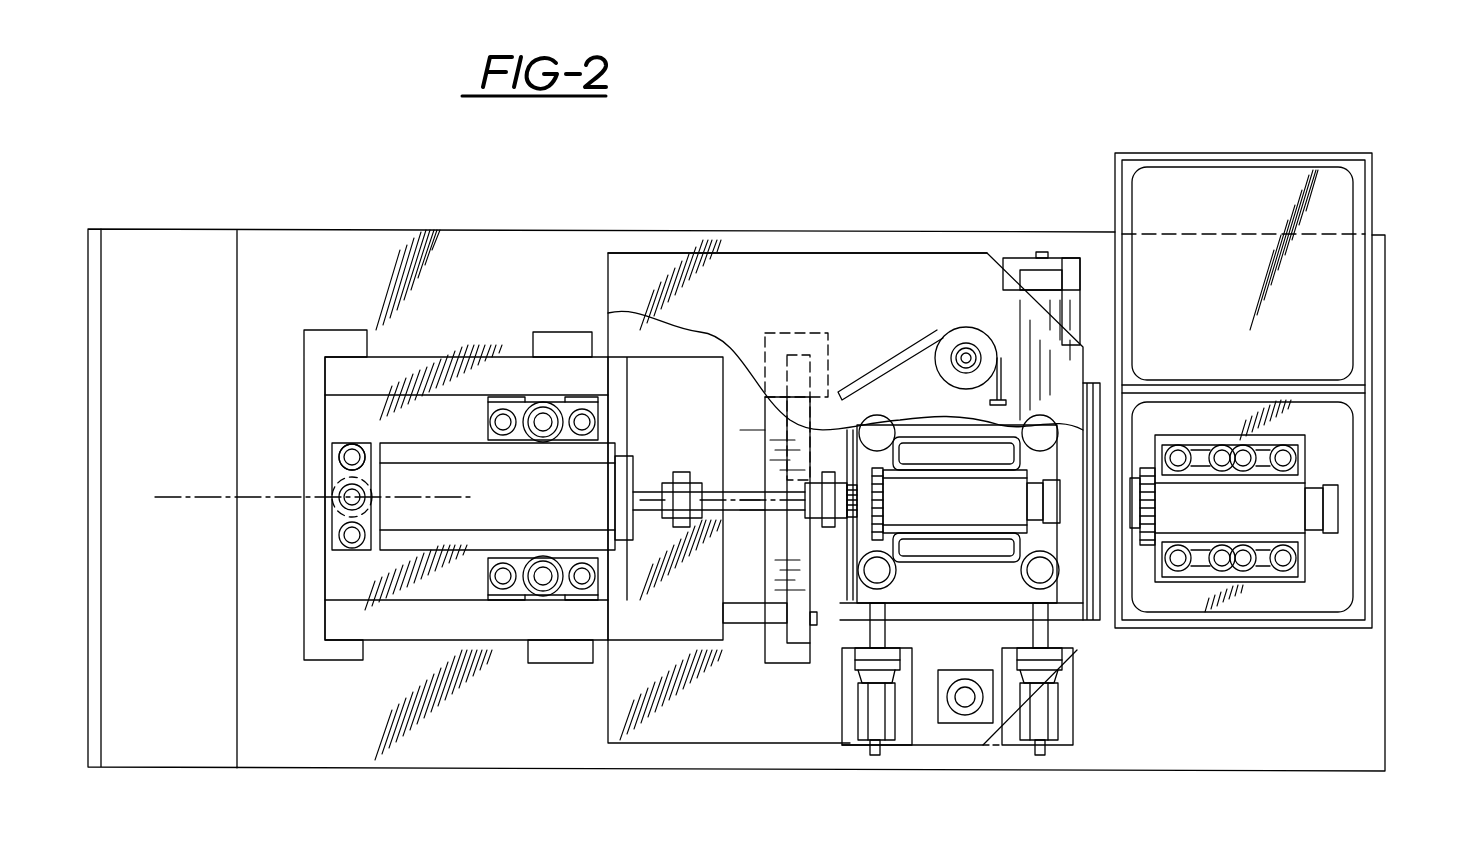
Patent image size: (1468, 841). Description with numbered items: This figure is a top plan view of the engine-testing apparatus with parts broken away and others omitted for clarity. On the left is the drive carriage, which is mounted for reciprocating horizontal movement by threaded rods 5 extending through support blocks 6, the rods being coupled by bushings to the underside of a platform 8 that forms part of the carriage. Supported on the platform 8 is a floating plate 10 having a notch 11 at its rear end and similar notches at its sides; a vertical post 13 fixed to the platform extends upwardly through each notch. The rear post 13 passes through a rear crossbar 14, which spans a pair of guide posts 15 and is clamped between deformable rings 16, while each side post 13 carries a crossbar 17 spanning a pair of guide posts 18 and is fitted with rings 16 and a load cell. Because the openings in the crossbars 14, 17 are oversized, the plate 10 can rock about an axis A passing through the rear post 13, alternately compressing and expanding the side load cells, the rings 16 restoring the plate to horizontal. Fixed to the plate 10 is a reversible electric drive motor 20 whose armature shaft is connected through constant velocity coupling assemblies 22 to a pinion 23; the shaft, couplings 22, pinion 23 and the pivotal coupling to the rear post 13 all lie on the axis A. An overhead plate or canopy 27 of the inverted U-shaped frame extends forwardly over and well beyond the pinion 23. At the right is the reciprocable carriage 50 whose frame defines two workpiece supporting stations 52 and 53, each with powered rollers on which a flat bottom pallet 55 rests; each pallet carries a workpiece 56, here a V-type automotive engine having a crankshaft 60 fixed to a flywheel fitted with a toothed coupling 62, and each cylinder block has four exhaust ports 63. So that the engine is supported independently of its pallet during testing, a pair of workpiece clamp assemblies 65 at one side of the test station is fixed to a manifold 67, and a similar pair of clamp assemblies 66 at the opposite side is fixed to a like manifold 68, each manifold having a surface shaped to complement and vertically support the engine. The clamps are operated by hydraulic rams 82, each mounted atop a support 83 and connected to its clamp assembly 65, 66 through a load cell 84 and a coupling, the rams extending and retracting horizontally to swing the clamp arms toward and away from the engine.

The axis A is at (207, 497).
The threaded rods 5 is at (750, 380).
The support blocks 6 is at (314, 330).
The platform 8 is at (383, 640).
The floating plate 10 is at (420, 600).
The notch 11 is at (340, 502).
The vertical post 13 is at (345, 495).
The rear crossbar 14 is at (345, 545).
The guide posts 15 is at (352, 456).
The deformable rings 16 is at (368, 494).
The crossbar 17 is at (488, 402).
The guide posts 18 is at (580, 418).
The drive motor 20 is at (549, 504).
The constant velocity coupling assemblies 22 is at (700, 475).
The pinion 23 is at (842, 398).
The canopy 27 is at (868, 253).
The carriage 50 is at (1097, 158).
The workpiece supporting station 52 is at (1362, 440).
The workpiece supporting station 53 is at (1367, 212).
The pallet 55 is at (1306, 600).
The workpiece 56 is at (1042, 466).
The crankshaft 60 is at (1300, 445).
The toothed coupling 62 is at (1178, 445).
The exhaust ports 63 is at (1243, 446).
The workpiece clamp assemblies 65 is at (1090, 673).
The clamp assemblies 66 is at (1097, 312).
The manifold 67 is at (969, 596).
The manifold 68 is at (940, 432).
The hydraulic ram 82 is at (1025, 268).
The support 83 is at (1075, 270).
The load cell 84 is at (1015, 657).